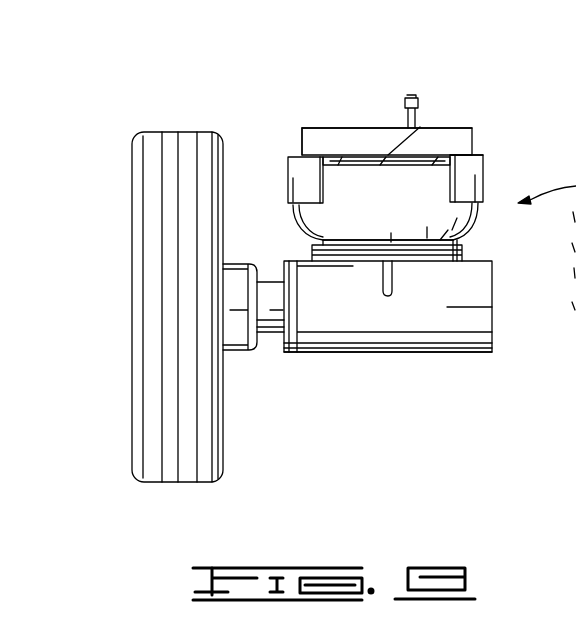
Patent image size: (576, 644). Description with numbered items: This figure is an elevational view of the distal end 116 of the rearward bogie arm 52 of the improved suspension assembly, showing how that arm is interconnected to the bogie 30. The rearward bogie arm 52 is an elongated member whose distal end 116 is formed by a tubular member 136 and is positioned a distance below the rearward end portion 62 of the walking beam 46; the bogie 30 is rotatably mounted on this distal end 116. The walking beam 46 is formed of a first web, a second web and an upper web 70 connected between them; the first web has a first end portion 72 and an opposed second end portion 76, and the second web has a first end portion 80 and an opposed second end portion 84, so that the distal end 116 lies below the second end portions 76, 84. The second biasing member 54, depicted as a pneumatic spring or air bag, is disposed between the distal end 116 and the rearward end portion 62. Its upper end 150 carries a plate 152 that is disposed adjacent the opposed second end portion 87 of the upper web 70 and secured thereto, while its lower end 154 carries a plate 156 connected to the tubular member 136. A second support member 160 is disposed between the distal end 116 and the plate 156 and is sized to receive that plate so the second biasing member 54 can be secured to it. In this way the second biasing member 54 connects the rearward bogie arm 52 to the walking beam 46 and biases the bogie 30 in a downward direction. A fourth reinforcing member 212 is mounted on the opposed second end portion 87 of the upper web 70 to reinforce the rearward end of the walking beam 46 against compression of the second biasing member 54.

The bogie 30 is at (190, 131).
The walking beam 46 is at (313, 116).
The upper web 70 is at (340, 124).
The rearward end portion 62 is at (497, 160).
The opposed second end portion 87 is at (352, 165).
The upper end 150 is at (357, 168).
The plate 152 is at (440, 138).
The fourth reinforcing member 212 is at (414, 179).
The second biasing member 54 is at (483, 158).
The first end portion 80 is at (483, 189).
The first end portion 72 is at (288, 163).
The opposed second end portion 76 is at (312, 189).
The opposed second end portion 84 is at (453, 194).
The lower end 154 is at (450, 228).
The plate 156 is at (316, 239).
The second support member 160 is at (457, 247).
The rearward bogie arm 52 is at (423, 305).
The tubular member 136 is at (410, 327).
The distal end 116 is at (375, 355).